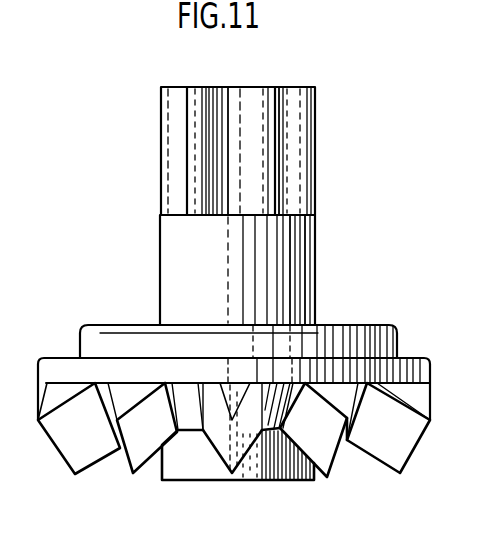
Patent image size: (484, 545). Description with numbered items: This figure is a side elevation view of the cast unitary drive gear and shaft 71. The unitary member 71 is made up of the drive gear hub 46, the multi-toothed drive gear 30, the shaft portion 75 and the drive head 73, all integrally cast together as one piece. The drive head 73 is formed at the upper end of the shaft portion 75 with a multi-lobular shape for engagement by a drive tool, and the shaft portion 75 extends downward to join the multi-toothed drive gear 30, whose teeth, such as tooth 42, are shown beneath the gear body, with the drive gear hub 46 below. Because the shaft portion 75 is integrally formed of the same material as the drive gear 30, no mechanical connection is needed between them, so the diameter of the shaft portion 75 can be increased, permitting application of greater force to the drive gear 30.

The cast unitary drive gear and shaft 71 is at (108, 61).
The drive head 73 is at (168, 123).
The shaft portion 75 is at (170, 245).
The multi-toothed drive gear 30 is at (413, 334).
The gear tooth 42 is at (75, 432).
The drive gear hub 46 is at (202, 460).